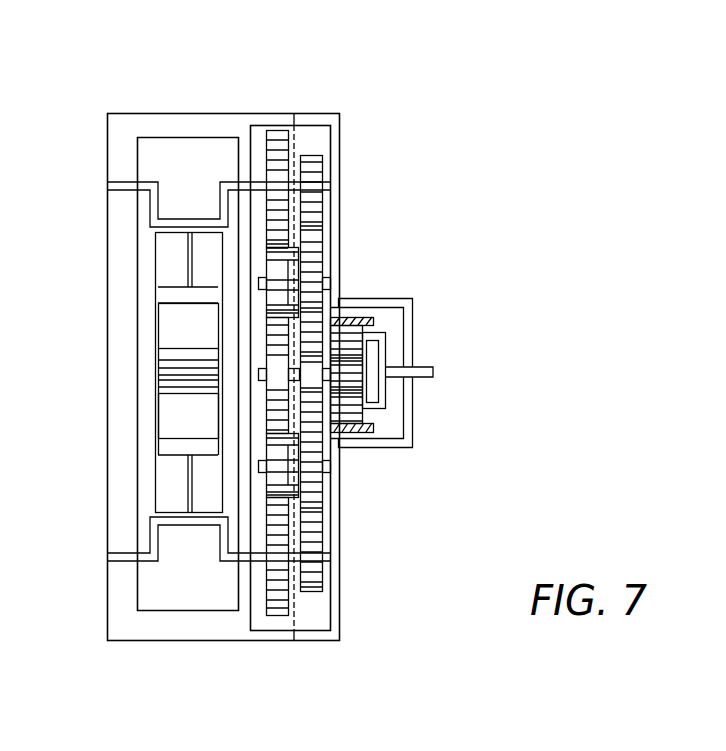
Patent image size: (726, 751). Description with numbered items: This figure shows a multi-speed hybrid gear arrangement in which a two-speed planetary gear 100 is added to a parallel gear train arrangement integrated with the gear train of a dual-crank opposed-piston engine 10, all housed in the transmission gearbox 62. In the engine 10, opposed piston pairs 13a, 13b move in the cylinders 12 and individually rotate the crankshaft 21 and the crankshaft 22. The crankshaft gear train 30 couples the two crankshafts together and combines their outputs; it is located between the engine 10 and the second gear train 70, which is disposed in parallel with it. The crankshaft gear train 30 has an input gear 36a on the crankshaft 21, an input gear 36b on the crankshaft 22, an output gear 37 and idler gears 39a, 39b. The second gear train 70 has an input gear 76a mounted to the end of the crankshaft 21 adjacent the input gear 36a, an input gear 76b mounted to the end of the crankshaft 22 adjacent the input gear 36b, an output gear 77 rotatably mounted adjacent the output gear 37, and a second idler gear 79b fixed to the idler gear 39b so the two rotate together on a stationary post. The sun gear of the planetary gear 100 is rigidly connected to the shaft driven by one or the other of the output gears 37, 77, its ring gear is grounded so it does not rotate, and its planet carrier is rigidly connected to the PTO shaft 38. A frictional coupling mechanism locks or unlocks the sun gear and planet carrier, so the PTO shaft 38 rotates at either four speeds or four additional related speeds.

The engine 10 is at (150, 113).
The cylinders 12 is at (155, 273).
The opposed piston 13a is at (170, 330).
The opposed piston 13b is at (170, 407).
The crankshaft 21 is at (125, 182).
The crankshaft 22 is at (127, 557).
The crankshaft gear train 30 is at (258, 138).
The input gear 36a is at (278, 134).
The input gear 36b is at (280, 607).
The output gear 37 is at (270, 402).
The PTO shaft 38 is at (435, 372).
The idler gear 39a is at (283, 272).
The idler gear 39b is at (290, 458).
The transmission gearbox 62 is at (400, 103).
The second gear train 70 is at (309, 136).
The input gear 76a is at (324, 170).
The input gear 76b is at (324, 538).
The output gear 77 is at (310, 357).
The second idler gear 79b is at (324, 507).
The two-speed planetary gear 100 is at (375, 321).